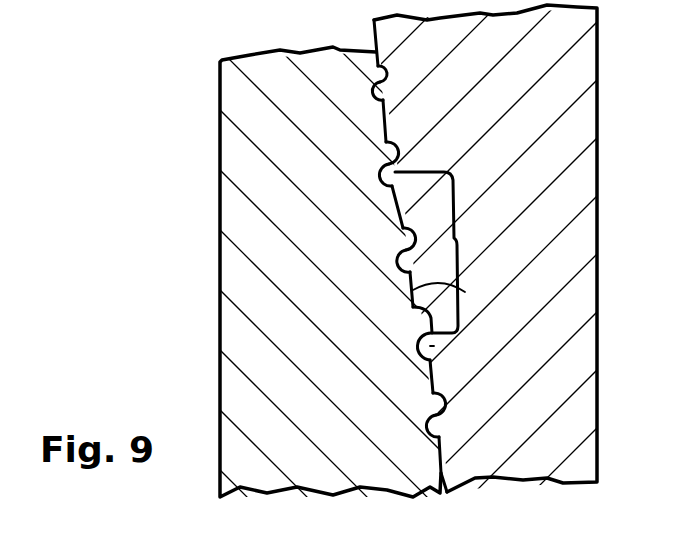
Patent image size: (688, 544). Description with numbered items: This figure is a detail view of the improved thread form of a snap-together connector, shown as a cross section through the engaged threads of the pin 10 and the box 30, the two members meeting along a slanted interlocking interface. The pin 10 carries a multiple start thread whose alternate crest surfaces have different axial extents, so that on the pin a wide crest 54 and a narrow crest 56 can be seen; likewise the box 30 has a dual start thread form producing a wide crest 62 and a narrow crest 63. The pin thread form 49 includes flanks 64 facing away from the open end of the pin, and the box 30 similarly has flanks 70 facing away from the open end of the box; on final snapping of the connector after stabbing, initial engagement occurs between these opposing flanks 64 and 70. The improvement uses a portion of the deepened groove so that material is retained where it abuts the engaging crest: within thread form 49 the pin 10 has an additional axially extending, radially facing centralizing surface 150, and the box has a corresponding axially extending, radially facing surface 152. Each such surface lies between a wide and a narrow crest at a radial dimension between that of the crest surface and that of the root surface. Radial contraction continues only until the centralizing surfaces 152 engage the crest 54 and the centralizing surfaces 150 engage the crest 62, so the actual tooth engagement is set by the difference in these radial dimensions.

The pin 10 is at (543, 258).
The box 30 is at (250, 275).
The pin thread form 49 is at (458, 240).
The wide crest 54 is at (465, 292).
The narrow crest 56 is at (430, 346).
The wide crest 62 is at (404, 213).
The narrow crest 63 is at (394, 160).
The flank 64 is at (386, 72).
The flank 70 is at (381, 90).
The centralizing surface 150 is at (436, 172).
The centralizing surface 152 is at (410, 308).